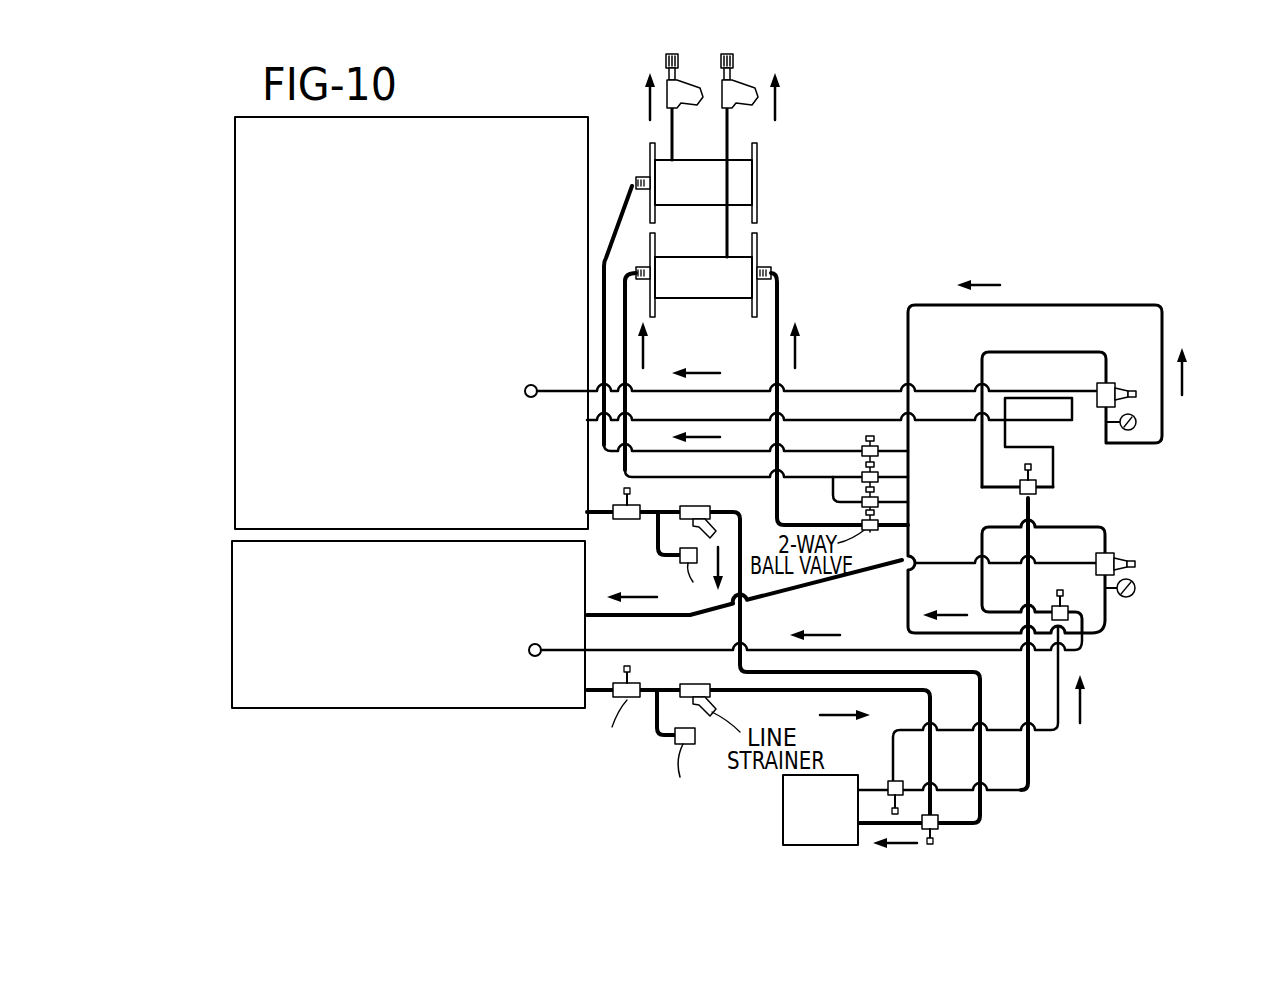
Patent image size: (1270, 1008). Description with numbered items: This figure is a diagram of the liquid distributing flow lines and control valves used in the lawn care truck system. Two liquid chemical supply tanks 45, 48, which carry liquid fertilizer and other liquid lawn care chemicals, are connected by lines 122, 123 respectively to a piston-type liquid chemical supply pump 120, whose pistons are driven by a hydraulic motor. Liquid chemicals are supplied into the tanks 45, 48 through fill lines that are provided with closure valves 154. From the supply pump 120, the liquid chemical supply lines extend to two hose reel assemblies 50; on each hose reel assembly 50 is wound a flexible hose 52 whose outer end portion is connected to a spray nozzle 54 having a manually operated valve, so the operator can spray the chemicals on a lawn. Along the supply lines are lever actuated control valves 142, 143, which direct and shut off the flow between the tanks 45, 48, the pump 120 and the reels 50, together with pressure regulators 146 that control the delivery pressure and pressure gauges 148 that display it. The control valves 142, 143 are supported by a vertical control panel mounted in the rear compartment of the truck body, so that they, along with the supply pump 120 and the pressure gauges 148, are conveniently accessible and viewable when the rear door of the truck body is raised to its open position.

The liquid chemical supply tank 45 is at (240, 358).
The liquid chemical supply tank 48 is at (242, 607).
The hose reel assembly 50 is at (766, 255).
The flexible hose 52 is at (671, 128).
The spray nozzle 54 is at (687, 80).
The liquid chemical supply pump 120 is at (805, 832).
The line 122 is at (603, 507).
The line 123 is at (595, 690).
The lever actuated control valve 142 is at (880, 500).
The lever actuated control valve 143 is at (933, 833).
The pressure regulator 146 is at (1120, 383).
The pressure gauge 148 is at (1138, 424).
The closure valve 154 is at (683, 560).